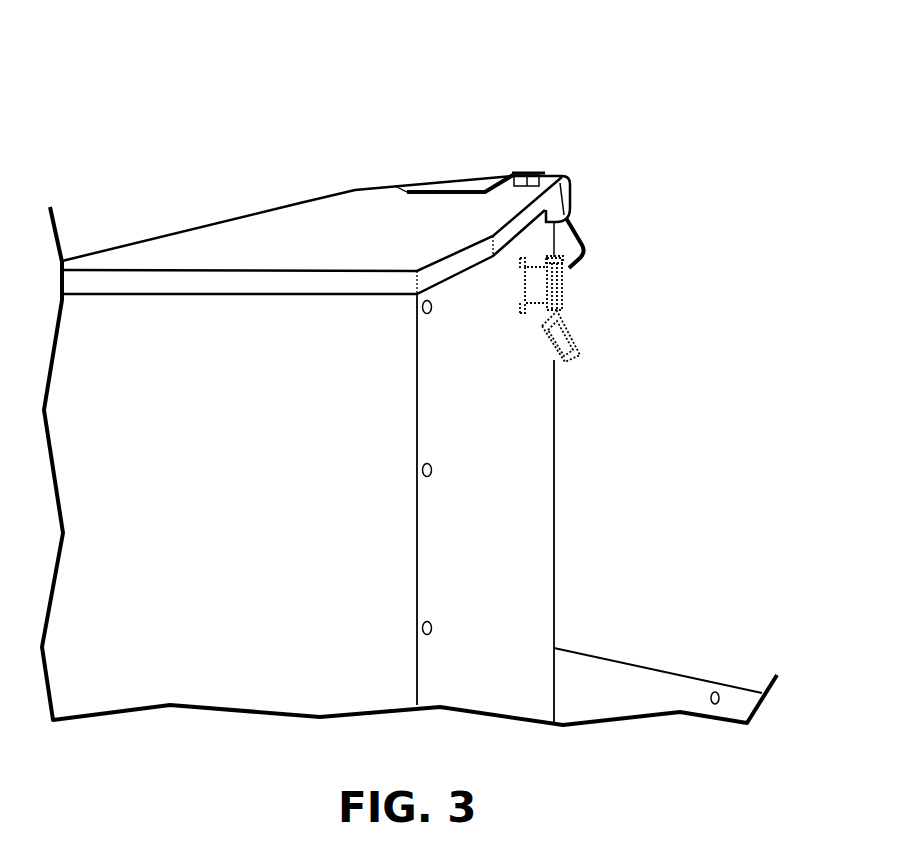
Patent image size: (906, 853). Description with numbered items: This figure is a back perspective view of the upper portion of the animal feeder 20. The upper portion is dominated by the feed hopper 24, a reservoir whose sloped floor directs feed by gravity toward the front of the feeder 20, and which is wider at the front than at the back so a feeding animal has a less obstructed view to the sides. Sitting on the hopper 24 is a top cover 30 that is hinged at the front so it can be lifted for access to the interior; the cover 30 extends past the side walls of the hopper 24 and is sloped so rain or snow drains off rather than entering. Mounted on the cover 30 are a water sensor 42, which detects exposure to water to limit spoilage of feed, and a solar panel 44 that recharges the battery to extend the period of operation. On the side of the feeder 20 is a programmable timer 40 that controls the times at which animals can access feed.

The animal feeder 20 is at (206, 78).
The top cover 30 is at (205, 246).
The solar panel 44 is at (463, 185).
The water sensor 42 is at (528, 175).
The feed hopper 24 is at (527, 500).
The timer 40 is at (575, 290).